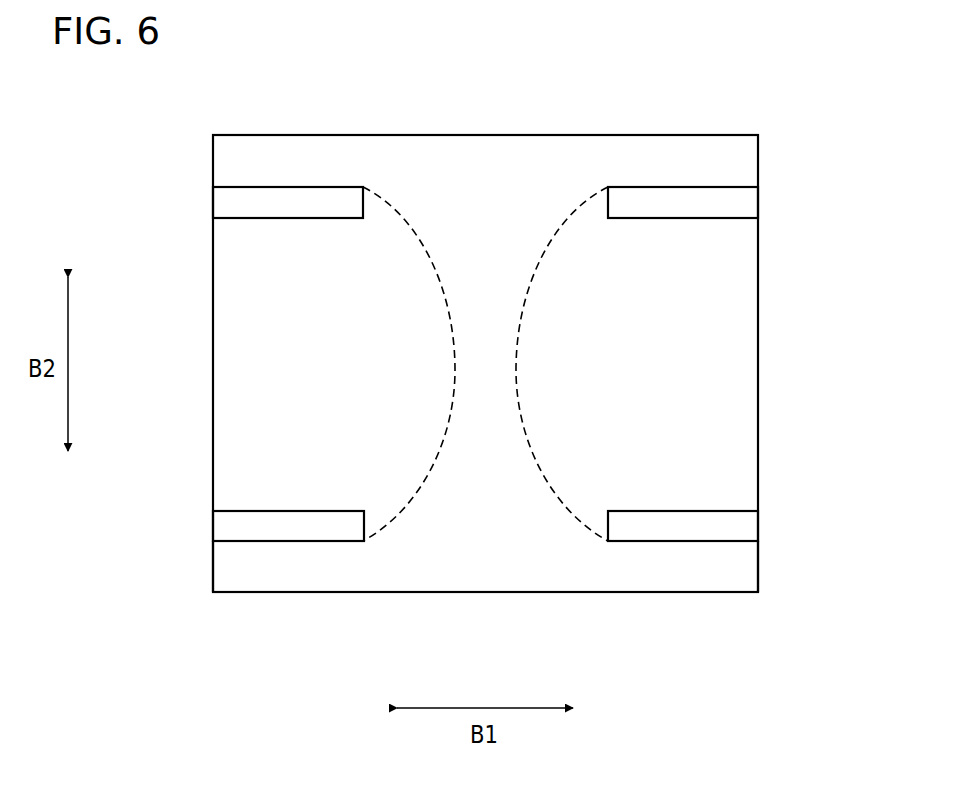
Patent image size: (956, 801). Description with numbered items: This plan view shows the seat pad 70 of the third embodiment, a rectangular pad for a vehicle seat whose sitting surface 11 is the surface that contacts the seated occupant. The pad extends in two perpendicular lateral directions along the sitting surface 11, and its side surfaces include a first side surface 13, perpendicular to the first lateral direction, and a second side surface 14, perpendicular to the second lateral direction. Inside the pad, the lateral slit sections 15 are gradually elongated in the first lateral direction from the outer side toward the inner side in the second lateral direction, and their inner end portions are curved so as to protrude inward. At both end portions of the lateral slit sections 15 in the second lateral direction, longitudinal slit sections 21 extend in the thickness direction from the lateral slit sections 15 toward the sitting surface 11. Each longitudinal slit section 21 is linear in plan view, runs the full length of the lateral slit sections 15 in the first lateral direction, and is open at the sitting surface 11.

The seat pad 70 is at (749, 90).
The sitting surface 11 is at (527, 160).
The first side surface 13 is at (213, 562).
The second side surface 14 is at (449, 135).
The lateral slit section 15 is at (432, 458).
The longitudinal slit section 21 is at (289, 197).